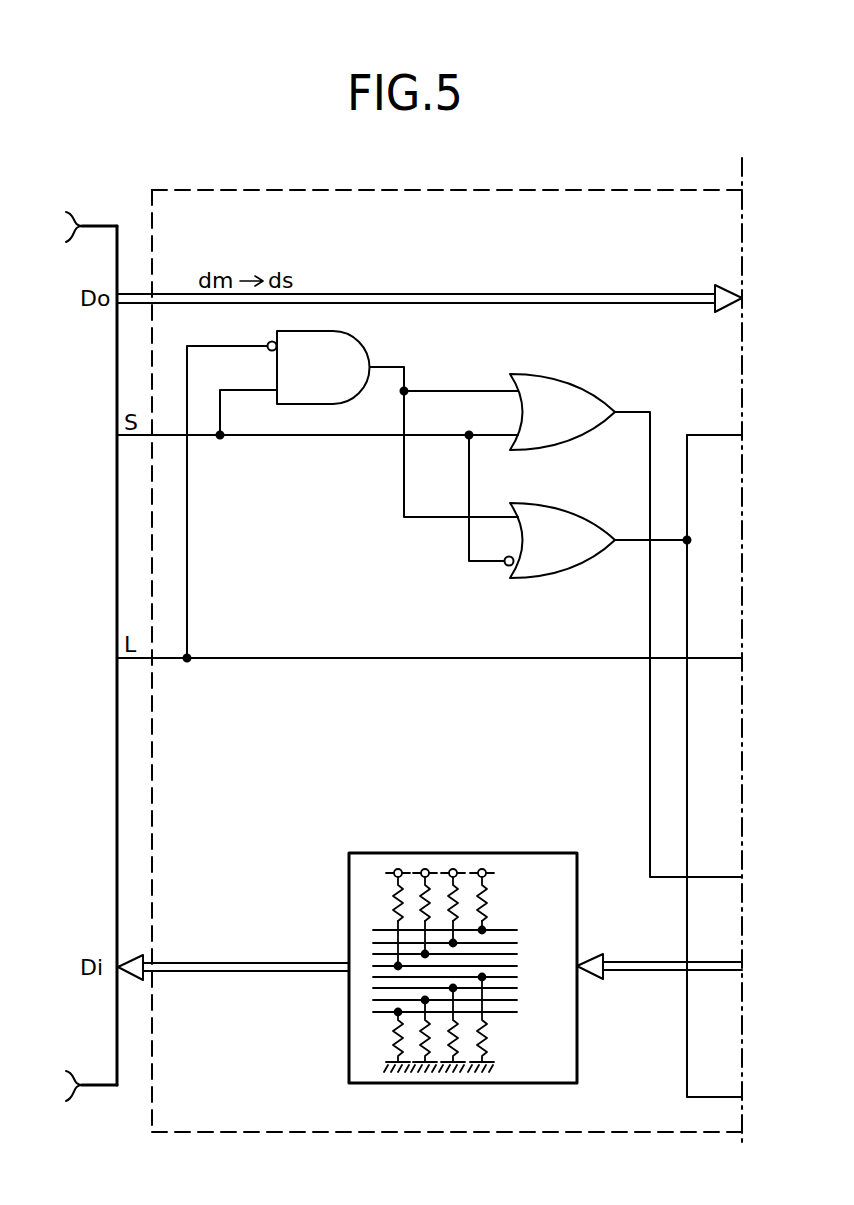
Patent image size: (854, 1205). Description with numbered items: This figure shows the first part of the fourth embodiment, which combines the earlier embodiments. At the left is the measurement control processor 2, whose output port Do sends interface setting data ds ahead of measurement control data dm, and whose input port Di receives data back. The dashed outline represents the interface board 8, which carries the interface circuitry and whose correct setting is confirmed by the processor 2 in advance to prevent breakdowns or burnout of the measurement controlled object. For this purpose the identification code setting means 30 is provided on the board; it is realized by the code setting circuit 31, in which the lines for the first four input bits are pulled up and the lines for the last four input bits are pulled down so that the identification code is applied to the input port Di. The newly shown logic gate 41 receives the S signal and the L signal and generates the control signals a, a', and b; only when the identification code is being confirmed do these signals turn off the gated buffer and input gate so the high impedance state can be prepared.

The measurement control processor 2 is at (92, 226).
The interface board 8 is at (553, 191).
The identification code setting means 30 is at (578, 843).
The code setting circuit 31 is at (395, 1084).
The logic gate 41 is at (615, 577).